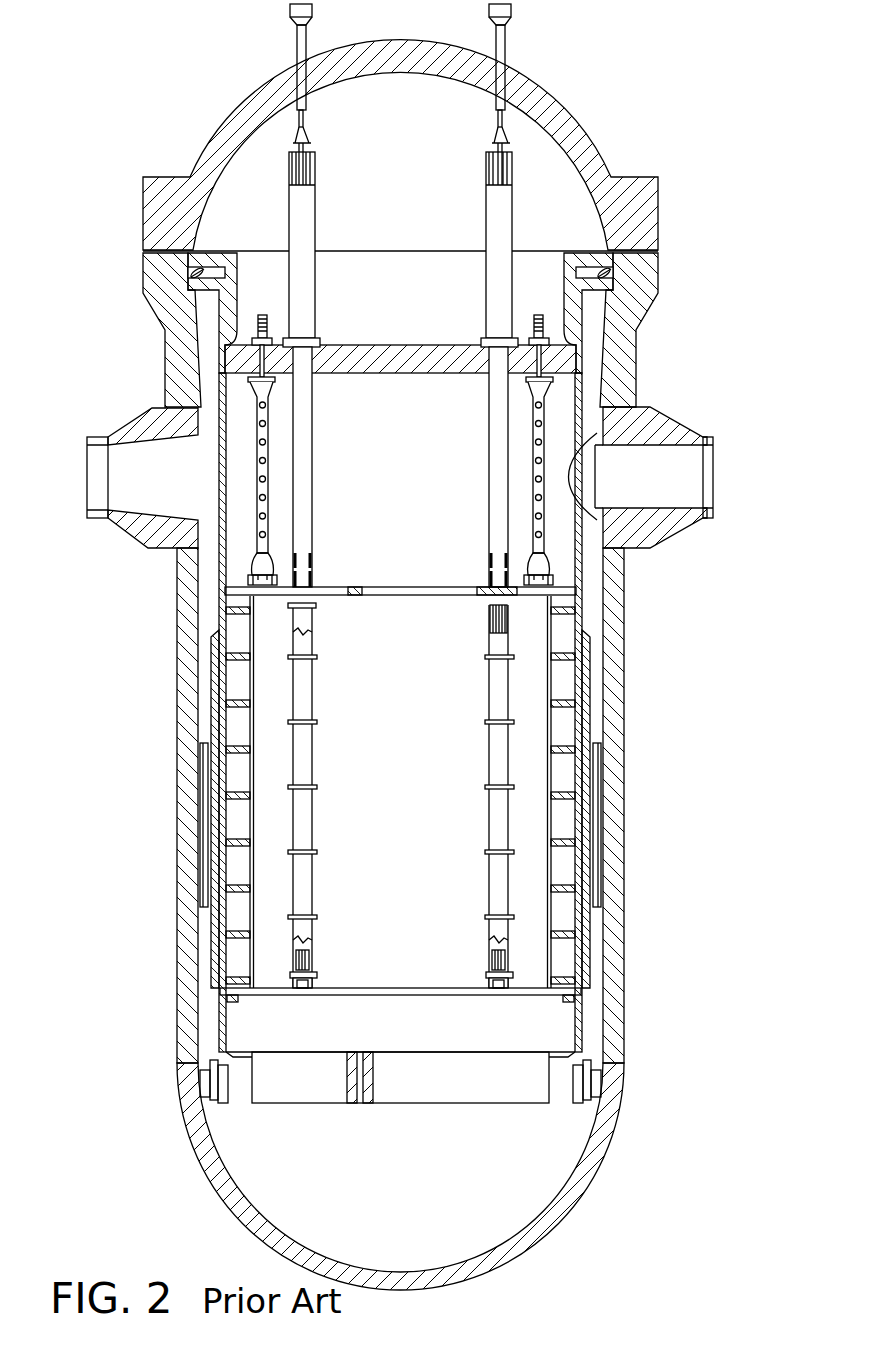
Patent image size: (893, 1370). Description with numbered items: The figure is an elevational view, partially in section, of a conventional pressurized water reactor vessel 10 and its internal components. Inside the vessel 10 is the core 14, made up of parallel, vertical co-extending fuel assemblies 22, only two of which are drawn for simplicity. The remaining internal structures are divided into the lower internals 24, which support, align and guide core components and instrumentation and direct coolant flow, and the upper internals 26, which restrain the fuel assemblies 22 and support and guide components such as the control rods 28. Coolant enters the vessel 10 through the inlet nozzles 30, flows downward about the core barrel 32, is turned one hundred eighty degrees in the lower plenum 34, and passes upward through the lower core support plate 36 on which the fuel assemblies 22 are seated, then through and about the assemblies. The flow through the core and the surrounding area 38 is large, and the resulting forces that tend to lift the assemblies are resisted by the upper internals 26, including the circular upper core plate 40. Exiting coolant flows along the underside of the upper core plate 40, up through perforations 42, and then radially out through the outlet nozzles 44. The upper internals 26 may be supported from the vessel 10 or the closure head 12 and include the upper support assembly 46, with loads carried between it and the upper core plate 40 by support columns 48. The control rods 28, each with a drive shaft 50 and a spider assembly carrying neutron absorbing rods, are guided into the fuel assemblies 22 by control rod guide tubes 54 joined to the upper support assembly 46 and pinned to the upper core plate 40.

The reactor vessel 10 is at (625, 662).
The vessel closure head 12 is at (657, 217).
The core 14 is at (421, 786).
The fuel assemblies 22 is at (315, 695).
The lower internals 24 is at (421, 1035).
The upper internals 26 is at (421, 452).
The control rods 28 is at (492, 605).
The inlet nozzles 30 is at (150, 410).
The core barrel 32 is at (217, 583).
The lower plenum 34 is at (567, 1155).
The lower core support plate 36 is at (462, 987).
The surrounding area 38 is at (570, 720).
The upper core plate 40 is at (440, 593).
The perforations 42 is at (360, 583).
The outlet nozzles 44 is at (678, 425).
The upper support assembly 46 is at (575, 249).
The support columns 48 is at (532, 428).
The drive shaft 50 is at (486, 166).
The control rod guide tubes 54 is at (313, 418).